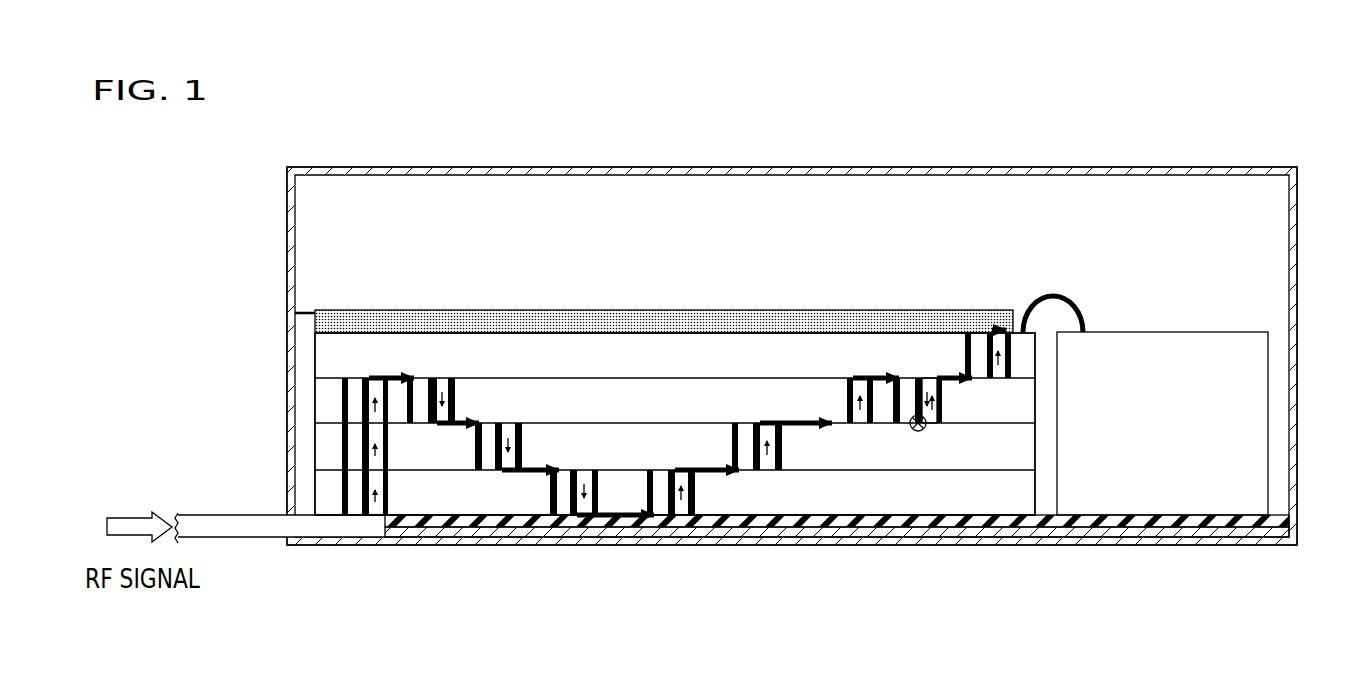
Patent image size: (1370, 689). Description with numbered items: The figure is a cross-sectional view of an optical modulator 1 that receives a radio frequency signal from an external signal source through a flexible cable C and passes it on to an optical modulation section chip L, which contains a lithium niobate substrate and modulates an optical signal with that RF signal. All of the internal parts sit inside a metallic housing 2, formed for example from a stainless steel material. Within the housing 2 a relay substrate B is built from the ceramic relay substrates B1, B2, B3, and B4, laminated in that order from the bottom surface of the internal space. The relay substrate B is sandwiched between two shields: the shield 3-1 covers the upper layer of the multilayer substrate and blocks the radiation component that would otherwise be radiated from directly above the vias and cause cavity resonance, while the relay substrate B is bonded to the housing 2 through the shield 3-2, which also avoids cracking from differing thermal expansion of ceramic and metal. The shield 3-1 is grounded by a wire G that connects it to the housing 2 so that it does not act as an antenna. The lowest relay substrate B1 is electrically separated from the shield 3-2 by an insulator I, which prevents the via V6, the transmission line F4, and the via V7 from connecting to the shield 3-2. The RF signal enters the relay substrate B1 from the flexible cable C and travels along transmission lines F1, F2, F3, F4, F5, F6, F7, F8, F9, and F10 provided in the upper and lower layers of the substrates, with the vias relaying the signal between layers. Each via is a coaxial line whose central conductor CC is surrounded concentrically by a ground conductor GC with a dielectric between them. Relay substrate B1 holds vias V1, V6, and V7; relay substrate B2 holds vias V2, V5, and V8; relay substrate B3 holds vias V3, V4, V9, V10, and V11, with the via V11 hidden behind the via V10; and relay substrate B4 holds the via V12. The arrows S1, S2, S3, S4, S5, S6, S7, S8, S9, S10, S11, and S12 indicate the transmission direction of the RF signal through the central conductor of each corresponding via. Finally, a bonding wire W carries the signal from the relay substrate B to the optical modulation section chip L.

The optical modulator 1 is at (806, 136).
The housing 2 is at (510, 168).
The shield 3-1 is at (352, 310).
The shield 3-2 is at (1268, 531).
The wire G is at (305, 313).
The flexible cable C is at (247, 538).
The ground conductor GC is at (345, 518).
The central conductor CC is at (366, 518).
The insulator I is at (474, 517).
The relay substrate B is at (1128, 360).
The relay substrate B1 is at (1037, 488).
The relay substrate B2 is at (1037, 440).
The relay substrate B3 is at (1037, 403).
The relay substrate B4 is at (1037, 366).
The optical modulation section chip L is at (1200, 331).
The bonding wire W is at (1058, 292).
The via V1 is at (342, 485).
The via V2 is at (342, 437).
The via V3 is at (342, 402).
The via V4 is at (441, 378).
The via V5 is at (509, 422).
The via V6 is at (560, 498).
The via V7 is at (660, 469).
The via V8 is at (745, 421).
The via V9 is at (848, 377).
The via V10 is at (912, 430).
The via V11 is at (929, 400).
The via V12 is at (1005, 381).
The transmission line F1 is at (396, 376).
The transmission line F2 is at (464, 421).
The transmission line F3 is at (560, 468).
The transmission line F4 is at (633, 518).
The transmission line F5 is at (712, 473).
The transmission line F6 is at (790, 421).
The transmission line F7 is at (880, 377).
The transmission line F8 is at (927, 430).
The transmission line F9 is at (940, 377).
The transmission line F10 is at (995, 329).
The arrow S1 is at (380, 494).
The arrow S2 is at (380, 450).
The arrow S3 is at (370, 400).
The arrow S4 is at (444, 398).
The arrow S5 is at (510, 445).
The arrow S6 is at (586, 490).
The arrow S7 is at (674, 496).
The arrow S8 is at (755, 448).
The arrow S9 is at (855, 405).
The arrow S10 is at (918, 398).
The arrow S11 is at (938, 401).
The arrow S12 is at (1010, 357).